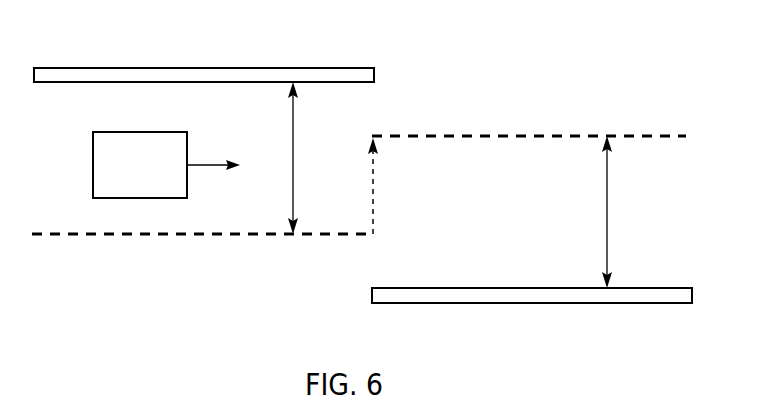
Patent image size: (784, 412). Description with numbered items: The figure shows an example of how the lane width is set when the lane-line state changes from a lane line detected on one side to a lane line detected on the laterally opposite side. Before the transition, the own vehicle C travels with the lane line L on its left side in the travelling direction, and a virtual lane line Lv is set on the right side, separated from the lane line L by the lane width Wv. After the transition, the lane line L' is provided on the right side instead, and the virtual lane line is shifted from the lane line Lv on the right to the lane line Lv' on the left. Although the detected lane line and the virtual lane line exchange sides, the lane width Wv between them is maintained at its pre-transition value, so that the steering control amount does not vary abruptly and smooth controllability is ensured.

The lane line L is at (204, 48).
The lane line L' is at (532, 319).
The own vehicle C is at (93, 166).
The virtual lane line Lv is at (202, 268).
The virtual lane line Lv' is at (529, 107).
The lane width Wv is at (469, 185).